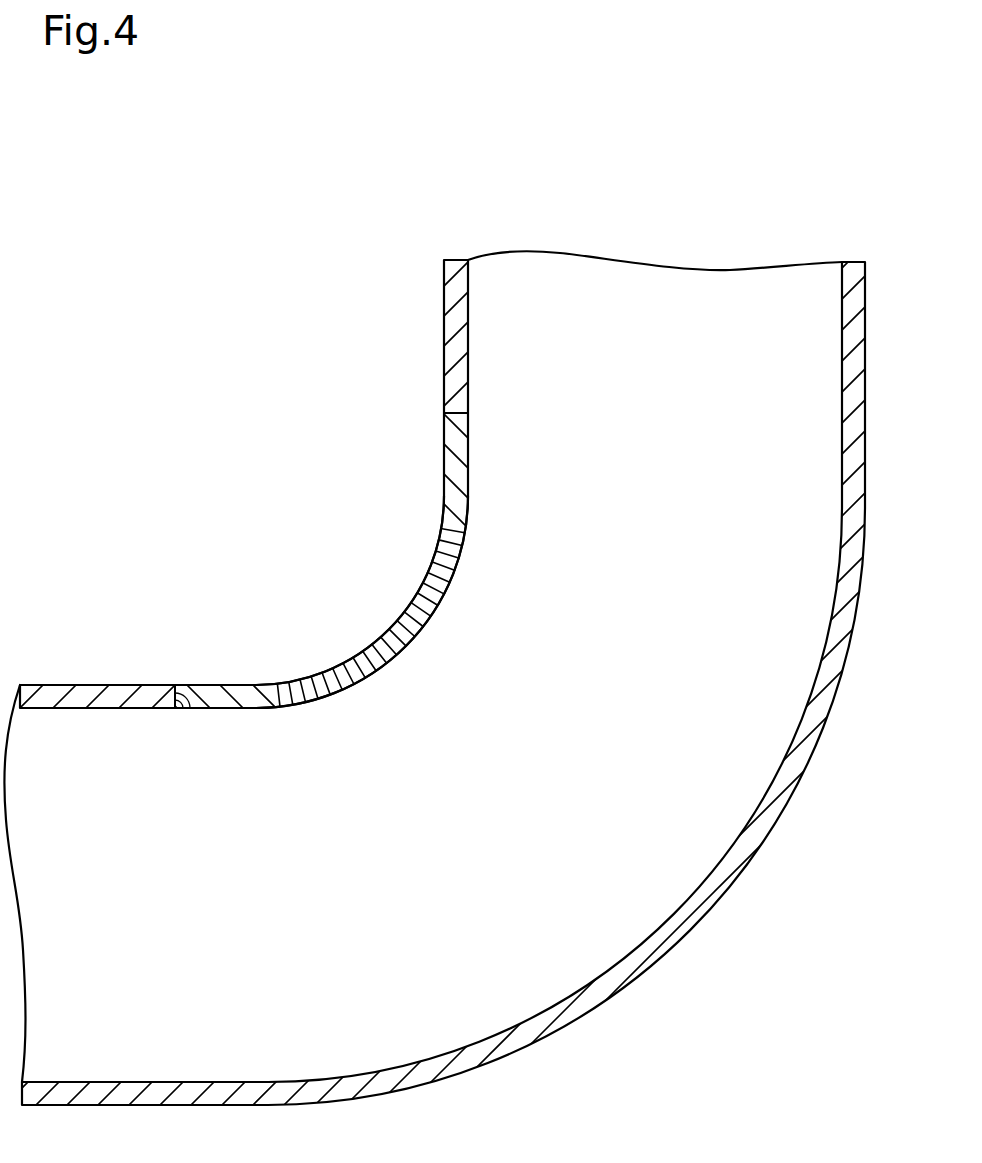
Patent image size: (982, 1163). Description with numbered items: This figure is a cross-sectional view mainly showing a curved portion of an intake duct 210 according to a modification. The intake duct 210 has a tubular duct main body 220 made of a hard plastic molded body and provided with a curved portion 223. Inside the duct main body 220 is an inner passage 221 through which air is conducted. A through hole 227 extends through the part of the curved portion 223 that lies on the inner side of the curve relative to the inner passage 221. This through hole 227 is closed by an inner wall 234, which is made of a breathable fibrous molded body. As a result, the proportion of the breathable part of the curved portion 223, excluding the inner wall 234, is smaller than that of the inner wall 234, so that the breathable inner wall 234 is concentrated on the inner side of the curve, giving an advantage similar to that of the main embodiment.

The intake duct 210 is at (140, 374).
The duct main body 220 is at (445, 324).
The inner passage 221 is at (148, 873).
The curved portion 223 is at (581, 1019).
The through hole 227 is at (193, 710).
The inner wall 234 is at (382, 642).